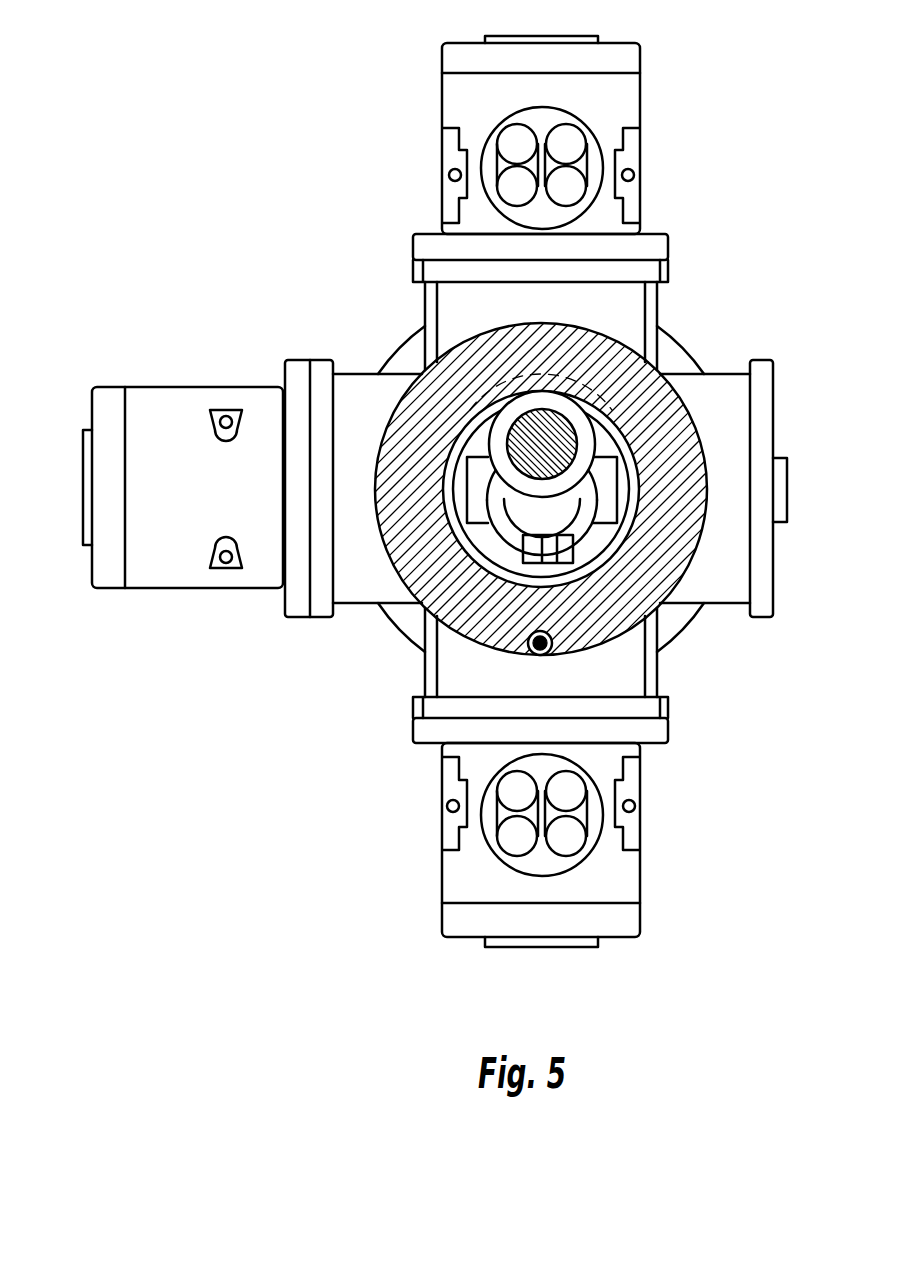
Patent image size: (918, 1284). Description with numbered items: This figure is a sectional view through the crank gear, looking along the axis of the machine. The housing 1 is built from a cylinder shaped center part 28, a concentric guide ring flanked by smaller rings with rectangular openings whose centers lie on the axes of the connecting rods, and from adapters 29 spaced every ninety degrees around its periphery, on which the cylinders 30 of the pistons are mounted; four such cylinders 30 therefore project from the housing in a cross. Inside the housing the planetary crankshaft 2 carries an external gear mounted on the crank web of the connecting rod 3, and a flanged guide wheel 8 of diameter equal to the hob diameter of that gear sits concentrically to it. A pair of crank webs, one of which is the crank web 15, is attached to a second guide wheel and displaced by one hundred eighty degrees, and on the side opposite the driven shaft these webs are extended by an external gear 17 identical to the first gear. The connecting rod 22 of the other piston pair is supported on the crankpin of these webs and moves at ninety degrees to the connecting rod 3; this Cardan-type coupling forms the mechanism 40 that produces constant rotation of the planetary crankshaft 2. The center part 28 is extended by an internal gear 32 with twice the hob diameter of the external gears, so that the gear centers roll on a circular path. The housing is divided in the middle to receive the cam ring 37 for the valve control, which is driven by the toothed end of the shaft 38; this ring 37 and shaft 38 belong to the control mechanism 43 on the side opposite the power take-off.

The housing 1 is at (400, 645).
The planetary crankshaft 2 is at (430, 597).
The connecting rod 3 is at (495, 532).
The guide wheel 8 is at (468, 400).
The crank web 15 is at (472, 488).
The external gear 17 is at (520, 375).
The connecting rod 22 is at (402, 600).
The cylinder shaped center part 28 is at (448, 398).
The adapter 29 is at (533, 305).
The cylinder 30 is at (488, 223).
The internal gear 32 is at (545, 393).
The cam ring 37 is at (440, 375).
The shaft 38 is at (532, 512).
The mechanism 40 is at (477, 445).
The control mechanism 43 is at (533, 658).